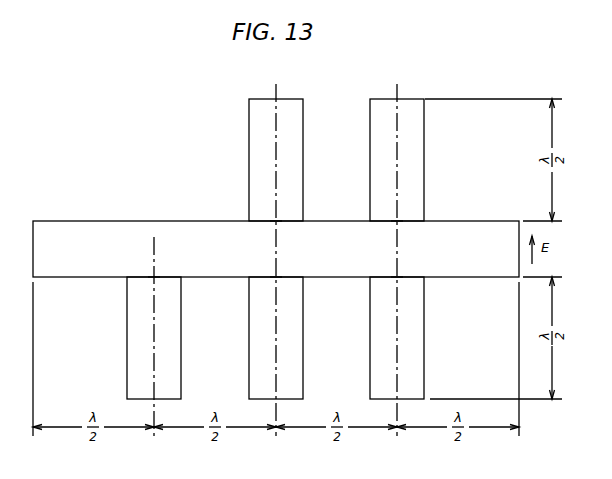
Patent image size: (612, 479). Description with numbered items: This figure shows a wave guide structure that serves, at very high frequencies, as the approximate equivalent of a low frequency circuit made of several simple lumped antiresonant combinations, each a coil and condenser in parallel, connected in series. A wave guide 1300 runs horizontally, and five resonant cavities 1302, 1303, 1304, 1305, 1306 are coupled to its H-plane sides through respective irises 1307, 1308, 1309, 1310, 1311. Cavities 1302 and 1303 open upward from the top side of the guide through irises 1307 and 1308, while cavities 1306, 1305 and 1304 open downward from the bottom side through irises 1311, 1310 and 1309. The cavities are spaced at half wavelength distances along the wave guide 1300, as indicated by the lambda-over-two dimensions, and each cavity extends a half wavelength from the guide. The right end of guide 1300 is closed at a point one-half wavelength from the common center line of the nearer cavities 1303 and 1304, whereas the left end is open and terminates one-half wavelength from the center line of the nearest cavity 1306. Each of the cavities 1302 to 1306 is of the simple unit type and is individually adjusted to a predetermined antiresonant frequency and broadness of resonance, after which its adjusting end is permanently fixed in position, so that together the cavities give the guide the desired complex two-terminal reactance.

The wave guide 1300 is at (126, 221).
The resonant cavity 1302 is at (249, 158).
The resonant cavity 1303 is at (370, 158).
The resonant cavity 1304 is at (370, 334).
The resonant cavity 1305 is at (249, 334).
The resonant cavity 1306 is at (127, 334).
The iris 1307 is at (277, 224).
The iris 1308 is at (398, 224).
The iris 1309 is at (400, 276).
The iris 1310 is at (278, 276).
The iris 1311 is at (156, 276).